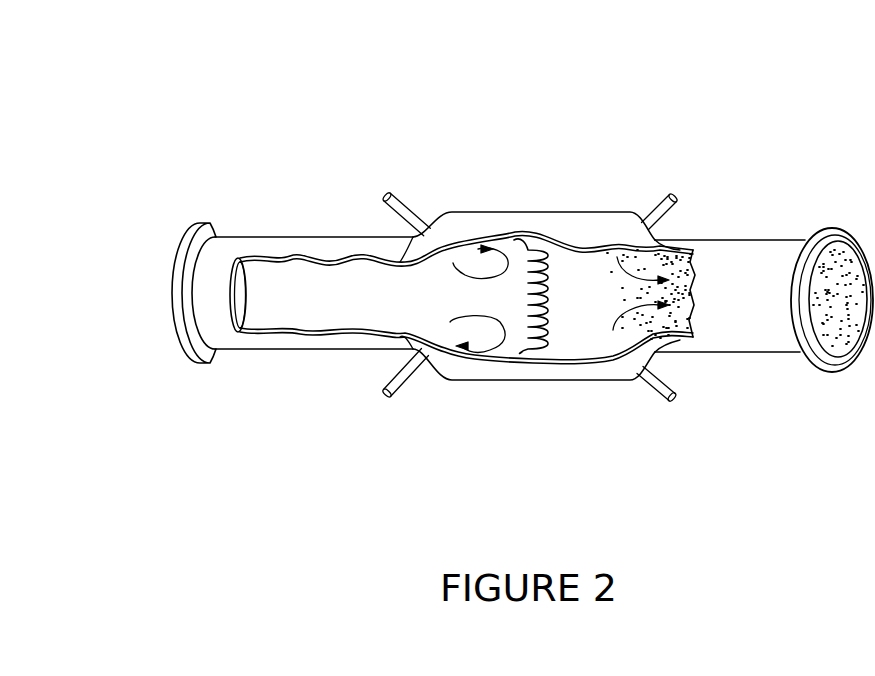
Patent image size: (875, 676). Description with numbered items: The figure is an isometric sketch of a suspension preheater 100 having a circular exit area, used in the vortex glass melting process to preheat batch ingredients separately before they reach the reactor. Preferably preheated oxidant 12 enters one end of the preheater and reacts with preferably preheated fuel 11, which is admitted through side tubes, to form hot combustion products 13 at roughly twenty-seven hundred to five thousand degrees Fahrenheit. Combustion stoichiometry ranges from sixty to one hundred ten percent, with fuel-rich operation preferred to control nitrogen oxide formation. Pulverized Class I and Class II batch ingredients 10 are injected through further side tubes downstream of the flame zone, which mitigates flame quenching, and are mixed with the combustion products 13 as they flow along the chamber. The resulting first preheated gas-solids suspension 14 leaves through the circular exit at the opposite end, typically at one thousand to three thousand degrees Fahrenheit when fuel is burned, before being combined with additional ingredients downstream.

The suspension preheater 100 is at (839, 225).
The Class I and Class II batch ingredients 10 is at (715, 435).
The fuel 11 is at (380, 399).
The oxidant 12 is at (162, 291).
The combustion products 13 is at (440, 297).
The preheated gas-solids suspension 14 is at (864, 296).